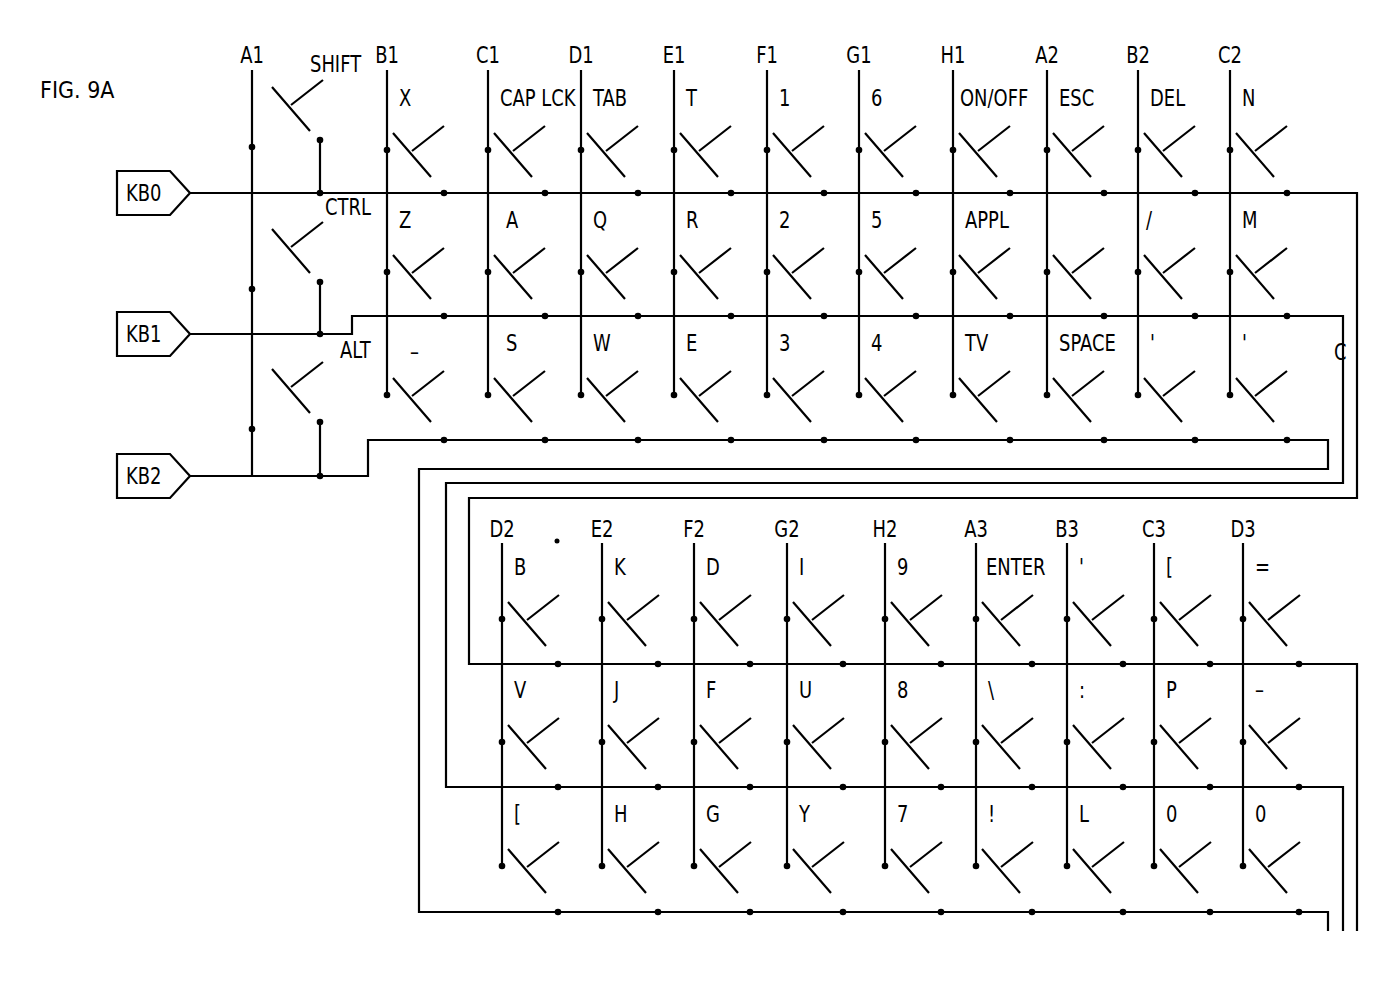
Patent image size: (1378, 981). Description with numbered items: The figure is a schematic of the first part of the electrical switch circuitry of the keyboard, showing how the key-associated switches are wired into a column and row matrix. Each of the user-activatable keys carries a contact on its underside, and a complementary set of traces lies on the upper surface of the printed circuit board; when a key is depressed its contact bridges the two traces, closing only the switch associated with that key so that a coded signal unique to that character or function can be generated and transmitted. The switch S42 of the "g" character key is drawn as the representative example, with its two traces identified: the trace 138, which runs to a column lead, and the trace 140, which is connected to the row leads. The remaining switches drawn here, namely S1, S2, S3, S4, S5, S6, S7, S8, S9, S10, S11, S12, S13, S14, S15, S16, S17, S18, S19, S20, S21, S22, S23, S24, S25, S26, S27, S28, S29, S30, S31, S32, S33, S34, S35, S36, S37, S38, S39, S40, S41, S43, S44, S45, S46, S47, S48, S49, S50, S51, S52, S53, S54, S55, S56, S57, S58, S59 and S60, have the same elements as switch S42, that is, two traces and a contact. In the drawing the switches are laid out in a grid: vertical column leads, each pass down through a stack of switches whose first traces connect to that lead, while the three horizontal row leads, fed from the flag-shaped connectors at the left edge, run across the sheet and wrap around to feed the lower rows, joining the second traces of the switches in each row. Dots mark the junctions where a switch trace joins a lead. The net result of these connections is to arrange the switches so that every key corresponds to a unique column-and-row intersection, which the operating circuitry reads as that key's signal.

The trace 138 is at (694, 803).
The trace 140 is at (675, 912).
The switch S1 is at (306, 138).
The switch S2 is at (306, 279).
The switch S3 is at (306, 420).
The switch S4 is at (424, 151).
The switch S5 is at (424, 273).
The switch S6 is at (424, 396).
The switch S7 is at (525, 151).
The switch S8 is at (525, 273).
The switch S9 is at (525, 396).
The switch S10 is at (624, 151).
The switch S11 is at (624, 273).
The switch S12 is at (624, 396).
The switch S13 is at (717, 151).
The switch S14 is at (717, 273).
The switch S15 is at (717, 396).
The switch S16 is at (810, 151).
The switch S17 is at (810, 273).
The switch S18 is at (810, 396).
The switch S19 is at (902, 151).
The switch S20 is at (902, 273).
The switch S21 is at (902, 396).
The switch S22 is at (996, 151).
The switch S23 is at (996, 273).
The switch S24 is at (996, 396).
The switch S25 is at (1090, 151).
The switch S26 is at (1090, 273).
The switch S27 is at (1090, 396).
The switch S28 is at (1181, 151).
The switch S29 is at (1181, 273).
The switch S30 is at (1181, 396).
The switch S31 is at (1273, 151).
The switch S32 is at (1273, 273).
The switch S33 is at (1273, 396).
The switch S34 is at (545, 620).
The switch S35 is at (545, 743).
The switch S36 is at (545, 867).
The switch S37 is at (645, 620).
The switch S38 is at (645, 743).
The switch S39 is at (645, 867).
The switch S40 is at (737, 620).
The switch S41 is at (737, 743).
The switch S42 is at (737, 867).
The switch S43 is at (830, 620).
The switch S44 is at (830, 743).
The switch S45 is at (830, 867).
The switch S46 is at (928, 620).
The switch S47 is at (928, 743).
The switch S48 is at (928, 867).
The switch S49 is at (1019, 620).
The switch S50 is at (1019, 743).
The switch S51 is at (1019, 867).
The switch S52 is at (1110, 620).
The switch S53 is at (1110, 743).
The switch S54 is at (1110, 867).
The switch S55 is at (1197, 620).
The switch S56 is at (1197, 743).
The switch S57 is at (1197, 867).
The switch S58 is at (1286, 620).
The switch S59 is at (1286, 743).
The switch S60 is at (1286, 867).